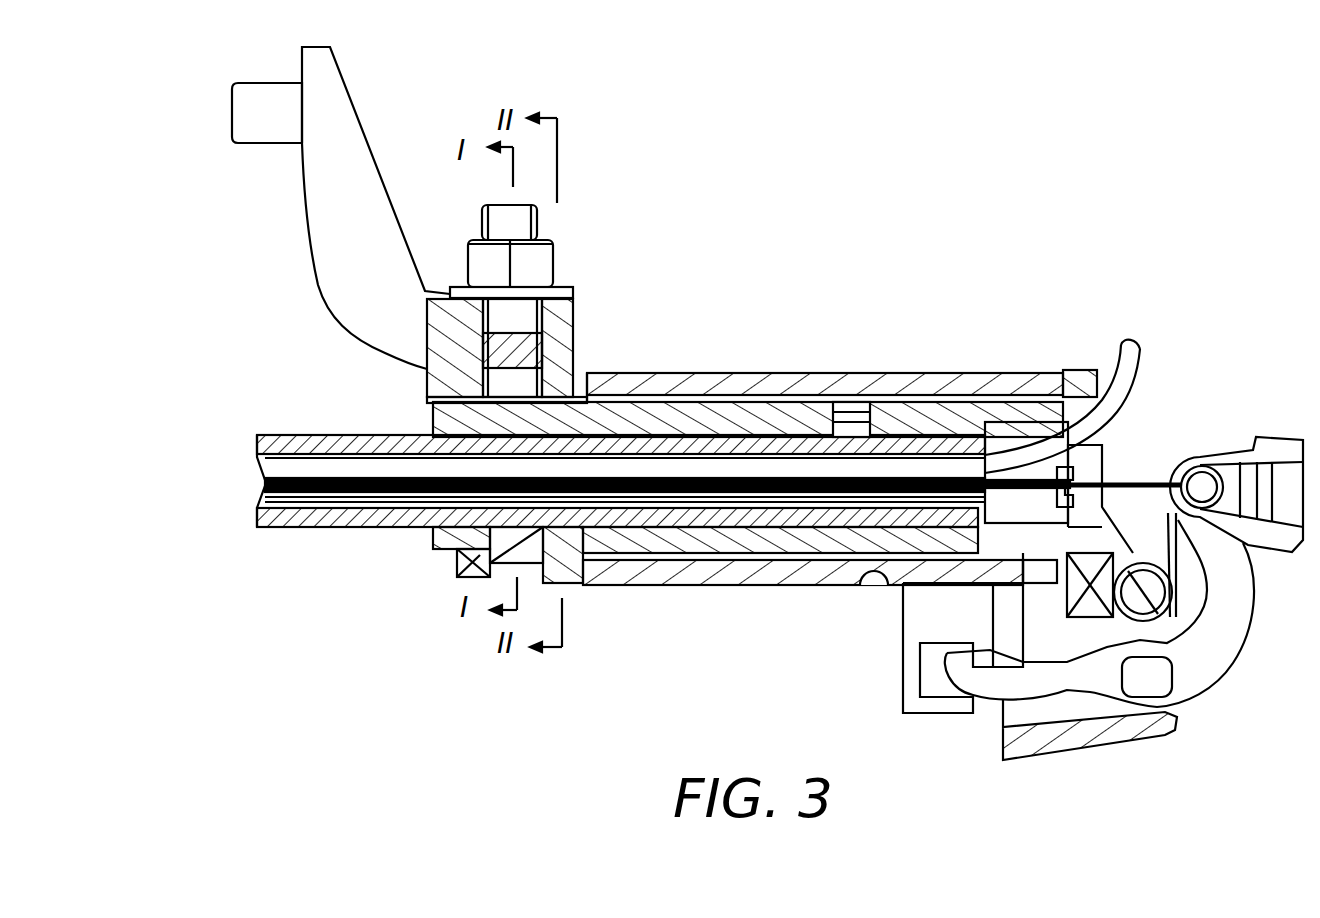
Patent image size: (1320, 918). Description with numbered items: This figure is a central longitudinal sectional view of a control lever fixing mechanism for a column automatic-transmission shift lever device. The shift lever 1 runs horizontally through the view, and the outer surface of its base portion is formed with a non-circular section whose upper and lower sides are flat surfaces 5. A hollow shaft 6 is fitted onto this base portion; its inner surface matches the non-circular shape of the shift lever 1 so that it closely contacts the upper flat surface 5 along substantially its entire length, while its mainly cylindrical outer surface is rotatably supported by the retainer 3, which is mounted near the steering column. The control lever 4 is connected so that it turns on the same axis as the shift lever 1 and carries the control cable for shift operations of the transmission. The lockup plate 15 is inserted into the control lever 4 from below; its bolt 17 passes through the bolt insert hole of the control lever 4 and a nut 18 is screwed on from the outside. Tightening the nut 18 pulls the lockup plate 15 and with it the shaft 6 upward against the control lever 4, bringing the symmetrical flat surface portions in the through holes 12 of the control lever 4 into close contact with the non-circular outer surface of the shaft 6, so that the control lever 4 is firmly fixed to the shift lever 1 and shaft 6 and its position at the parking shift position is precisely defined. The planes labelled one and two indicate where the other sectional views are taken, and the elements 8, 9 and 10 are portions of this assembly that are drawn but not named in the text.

The shift lever 1 is at (287, 528).
The retainer 3 is at (846, 375).
The control lever 4 is at (352, 176).
The flat surfaces 5 is at (763, 437).
The hollow shaft 6 is at (665, 410).
The flange plate 8 is at (578, 392).
The lever bracket 9 is at (346, 268).
The clamp block 10 is at (465, 562).
The through holes 12 is at (572, 372).
The lockup plate 15 is at (497, 352).
The bolt 17 is at (518, 222).
The nut 18 is at (487, 267).